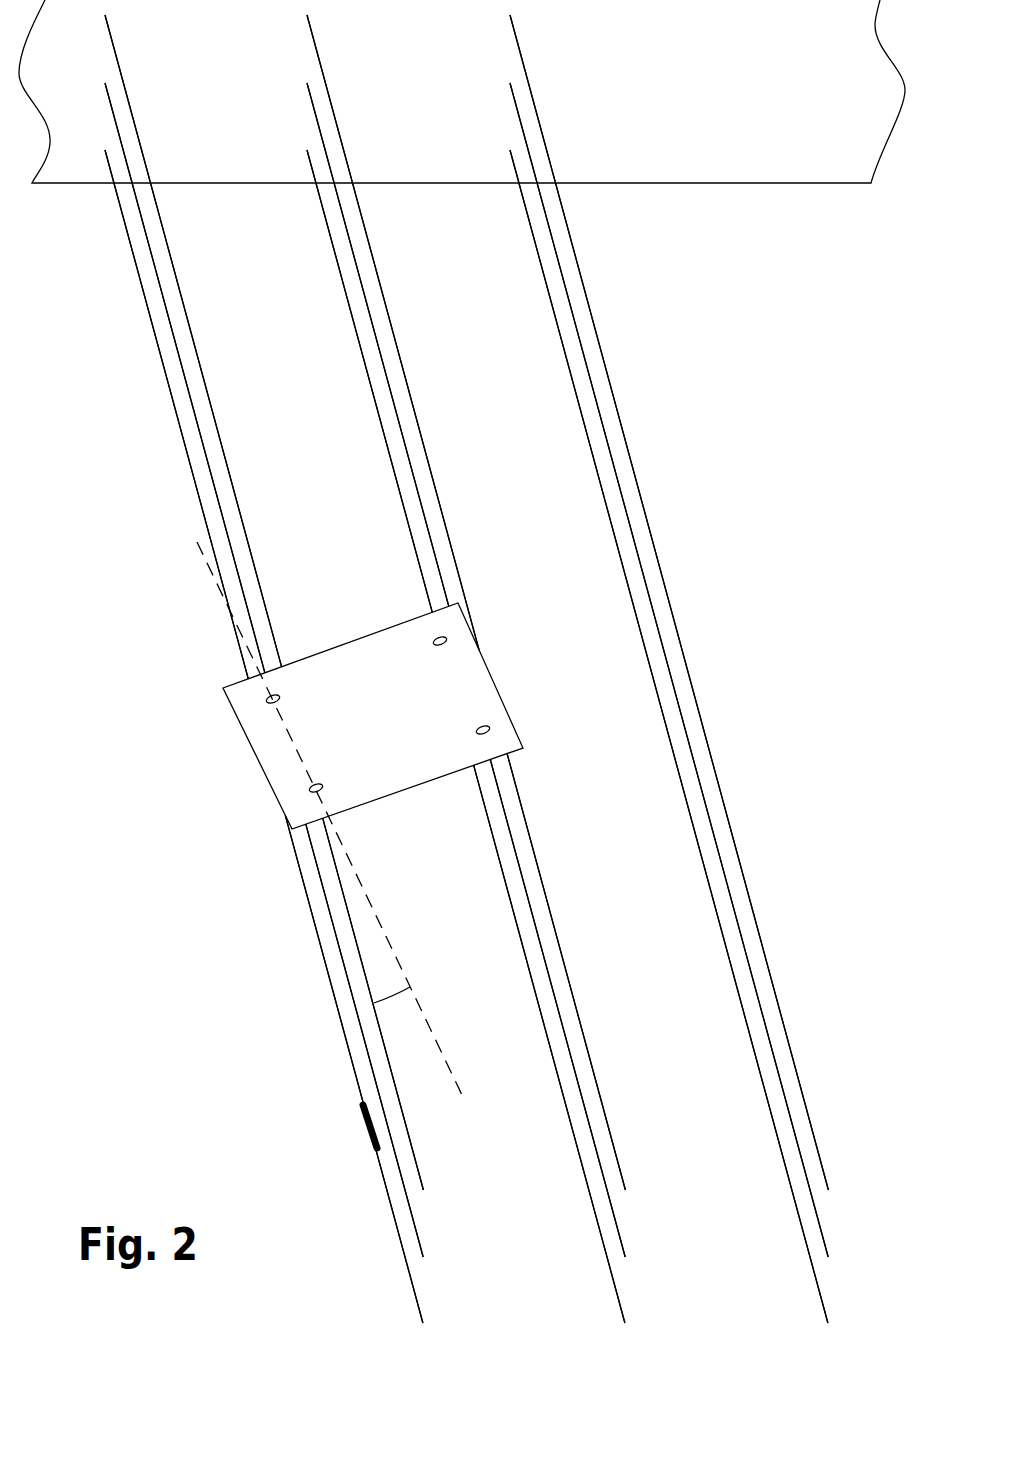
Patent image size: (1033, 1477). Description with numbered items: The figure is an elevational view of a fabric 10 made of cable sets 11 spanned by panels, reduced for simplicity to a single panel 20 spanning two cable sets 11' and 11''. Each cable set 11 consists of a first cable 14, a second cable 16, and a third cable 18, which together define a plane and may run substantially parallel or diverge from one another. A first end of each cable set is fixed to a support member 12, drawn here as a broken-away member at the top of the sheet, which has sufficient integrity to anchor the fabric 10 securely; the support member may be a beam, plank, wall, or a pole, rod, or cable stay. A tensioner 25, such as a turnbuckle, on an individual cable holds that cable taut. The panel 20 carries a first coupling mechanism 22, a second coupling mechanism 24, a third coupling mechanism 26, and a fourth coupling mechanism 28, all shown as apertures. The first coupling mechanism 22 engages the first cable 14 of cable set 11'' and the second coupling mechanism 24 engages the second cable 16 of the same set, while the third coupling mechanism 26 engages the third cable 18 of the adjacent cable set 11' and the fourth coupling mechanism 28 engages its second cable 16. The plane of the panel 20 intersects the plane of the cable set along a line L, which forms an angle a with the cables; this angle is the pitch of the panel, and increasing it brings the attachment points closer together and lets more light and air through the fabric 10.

The fabric 10 is at (192, 922).
The cable set 11 is at (669, 669).
The cable set 11' is at (473, 669).
The cable set 11'' is at (264, 669).
The support member 12 is at (688, 94).
The first cable 14 is at (190, 320).
The second cable 16 is at (150, 245).
The third cable 18 is at (162, 358).
The panel 20 is at (353, 694).
The first coupling mechanism 22 is at (320, 784).
The second coupling mechanism 24 is at (272, 705).
The third coupling mechanism 26 is at (436, 644).
The fourth coupling mechanism 28 is at (482, 736).
The tensioner 25 is at (370, 1130).
The line of intersection L is at (432, 1028).
The angle a is at (392, 1009).